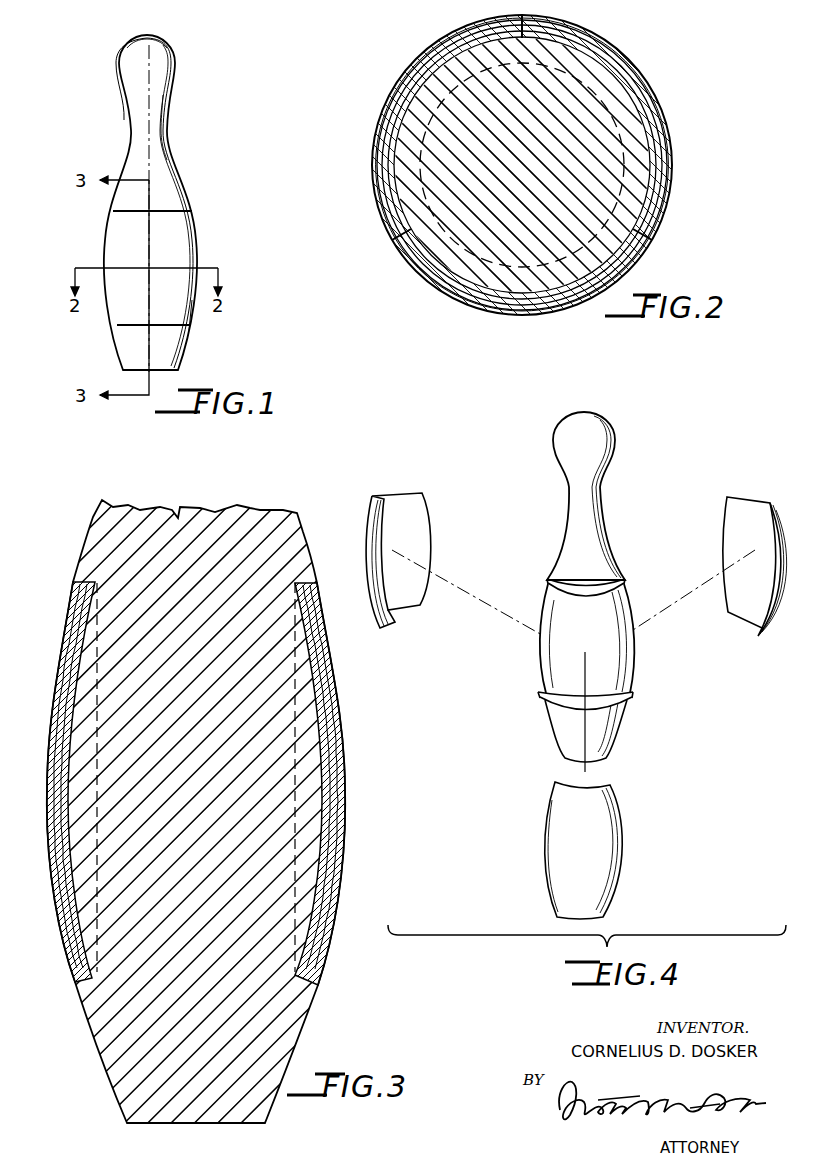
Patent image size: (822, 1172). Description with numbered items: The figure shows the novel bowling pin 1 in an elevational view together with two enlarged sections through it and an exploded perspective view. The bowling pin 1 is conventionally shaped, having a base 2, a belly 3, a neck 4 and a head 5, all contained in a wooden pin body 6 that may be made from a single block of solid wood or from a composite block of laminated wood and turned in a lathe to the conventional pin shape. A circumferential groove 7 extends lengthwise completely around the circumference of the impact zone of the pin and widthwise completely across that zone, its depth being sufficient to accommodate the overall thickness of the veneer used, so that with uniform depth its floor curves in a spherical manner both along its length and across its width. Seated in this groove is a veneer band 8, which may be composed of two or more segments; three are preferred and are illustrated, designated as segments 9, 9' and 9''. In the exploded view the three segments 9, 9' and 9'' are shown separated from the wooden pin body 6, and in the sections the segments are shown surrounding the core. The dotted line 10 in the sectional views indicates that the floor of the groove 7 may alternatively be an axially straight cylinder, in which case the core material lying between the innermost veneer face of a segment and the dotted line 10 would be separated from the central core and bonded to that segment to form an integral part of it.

In FIG. 1, the bowling pin 1 is at (178, 88).
In FIG. 1, the base 2 is at (164, 371).
In FIG. 3, the base 2 is at (128, 1124).
In FIG. 1, the belly 3 is at (193, 312).
In FIG. 1, the neck 4 is at (169, 146).
In FIG. 1, the head 5 is at (128, 60).
In FIG. 2, the wooden pin body 6 is at (512, 208).
In FIG. 3, the wooden pin body 6 is at (195, 846).
In FIG. 4, the wooden pin body 6 is at (594, 528).
In FIG. 4, the circumferential groove 7 is at (636, 670).
In FIG. 1, the veneer band 8 is at (198, 226).
In FIG. 2, the veneer band 8 is at (672, 210).
In FIG. 2, the veneer band segment 9 is at (435, 126).
In FIG. 3, the veneer band segment 9 is at (181, 783).
In FIG. 4, the veneer band segment 9 is at (454, 564).
In FIG. 2, the veneer band segment 9' is at (545, 129).
In FIG. 4, the veneer band segment 9' is at (710, 566).
In FIG. 2, the veneer band segment 9'' is at (523, 291).
In FIG. 4, the veneer band segment 9'' is at (606, 850).
In FIG. 2, the dotted line 10 is at (436, 120).
In FIG. 3, the dotted line 10 is at (98, 801).